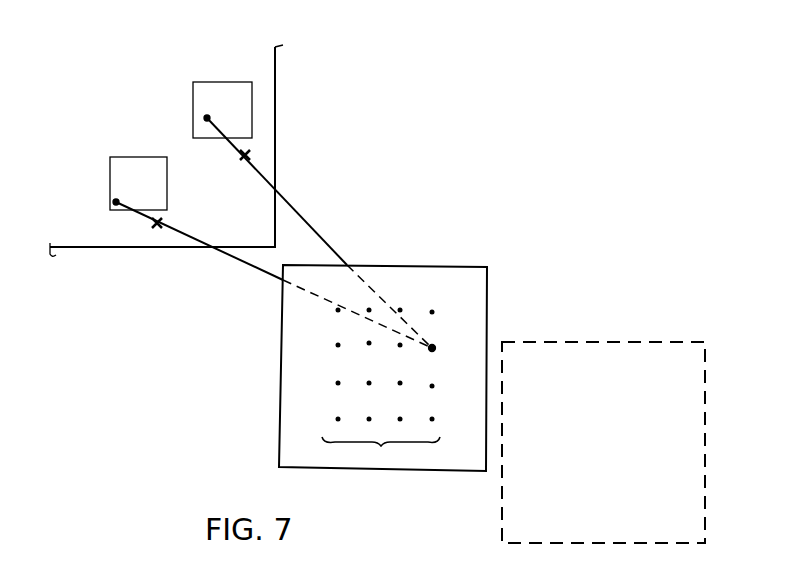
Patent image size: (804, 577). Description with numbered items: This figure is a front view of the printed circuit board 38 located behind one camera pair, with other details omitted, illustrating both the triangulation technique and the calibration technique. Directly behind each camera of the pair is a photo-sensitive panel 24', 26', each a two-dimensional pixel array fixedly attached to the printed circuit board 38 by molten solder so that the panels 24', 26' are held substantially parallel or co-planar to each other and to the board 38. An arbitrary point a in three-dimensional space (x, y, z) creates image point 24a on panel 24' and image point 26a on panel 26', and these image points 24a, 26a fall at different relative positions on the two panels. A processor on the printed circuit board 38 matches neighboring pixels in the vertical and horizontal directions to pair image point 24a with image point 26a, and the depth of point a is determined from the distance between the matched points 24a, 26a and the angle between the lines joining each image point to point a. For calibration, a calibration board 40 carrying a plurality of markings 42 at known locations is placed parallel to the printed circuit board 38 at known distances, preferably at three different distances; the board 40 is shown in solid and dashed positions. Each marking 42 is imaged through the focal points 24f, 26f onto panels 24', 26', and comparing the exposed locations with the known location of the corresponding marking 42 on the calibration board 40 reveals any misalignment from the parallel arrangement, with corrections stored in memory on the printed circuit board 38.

The photo-sensitive panel 24' is at (207, 85).
The image point 24a is at (207, 118).
The focal point 24f is at (245, 155).
The photo-sensitive panel 26' is at (107, 174).
The image point 26a is at (116, 202).
The focal point 26f is at (152, 226).
The printed circuit board 38 is at (275, 78).
The calibration board 40 is at (487, 317).
The markings 42 is at (380, 448).
The arbitrary point a is at (432, 348).